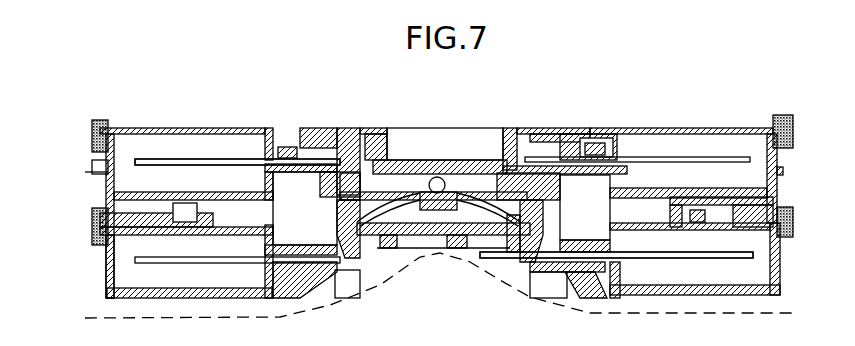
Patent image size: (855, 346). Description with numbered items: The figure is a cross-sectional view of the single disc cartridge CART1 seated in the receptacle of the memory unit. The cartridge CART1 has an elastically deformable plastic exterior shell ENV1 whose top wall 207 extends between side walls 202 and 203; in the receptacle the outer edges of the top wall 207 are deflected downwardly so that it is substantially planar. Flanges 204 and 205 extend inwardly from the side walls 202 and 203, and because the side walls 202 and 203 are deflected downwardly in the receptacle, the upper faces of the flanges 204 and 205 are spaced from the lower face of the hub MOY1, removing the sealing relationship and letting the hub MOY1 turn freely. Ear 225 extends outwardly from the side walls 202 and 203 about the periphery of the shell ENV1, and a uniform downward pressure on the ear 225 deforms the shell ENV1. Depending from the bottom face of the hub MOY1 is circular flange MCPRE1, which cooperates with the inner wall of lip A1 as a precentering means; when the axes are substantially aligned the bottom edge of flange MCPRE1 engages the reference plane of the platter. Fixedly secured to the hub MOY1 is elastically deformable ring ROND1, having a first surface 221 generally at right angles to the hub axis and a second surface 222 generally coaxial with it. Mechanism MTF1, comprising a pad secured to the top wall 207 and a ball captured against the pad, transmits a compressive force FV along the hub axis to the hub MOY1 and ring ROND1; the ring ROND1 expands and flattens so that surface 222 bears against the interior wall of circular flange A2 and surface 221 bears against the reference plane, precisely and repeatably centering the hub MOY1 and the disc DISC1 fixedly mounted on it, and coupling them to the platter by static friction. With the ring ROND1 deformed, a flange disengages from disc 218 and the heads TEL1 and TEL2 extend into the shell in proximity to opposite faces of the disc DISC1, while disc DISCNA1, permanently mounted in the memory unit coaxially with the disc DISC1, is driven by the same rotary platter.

The ear 225 is at (107, 128).
The first surface 221 is at (370, 207).
The top wall 207 is at (603, 128).
The side wall 202 is at (96, 165).
The side wall 203 is at (778, 156).
The disc 218 is at (100, 189).
The flange 205 is at (793, 221).
The flange 204 is at (110, 250).
The second surface 222 is at (396, 262).
The exterior shell ENV1 is at (140, 128).
The head TEL1 is at (170, 159).
The head TEL2 is at (172, 166).
The circular flange MCPRE1 is at (213, 214).
The flange A1 is at (197, 238).
The circular flange A2 is at (383, 235).
The force transmitting mechanism MTF1 is at (443, 170).
The hub MOY1 is at (554, 203).
The elastically deformable ring ROND1 is at (426, 222).
The disc DISC1 is at (665, 162).
The disc DISCNA1 is at (638, 257).
The cartridge CART1 is at (683, 128).
The compressive force FV is at (518, 78).